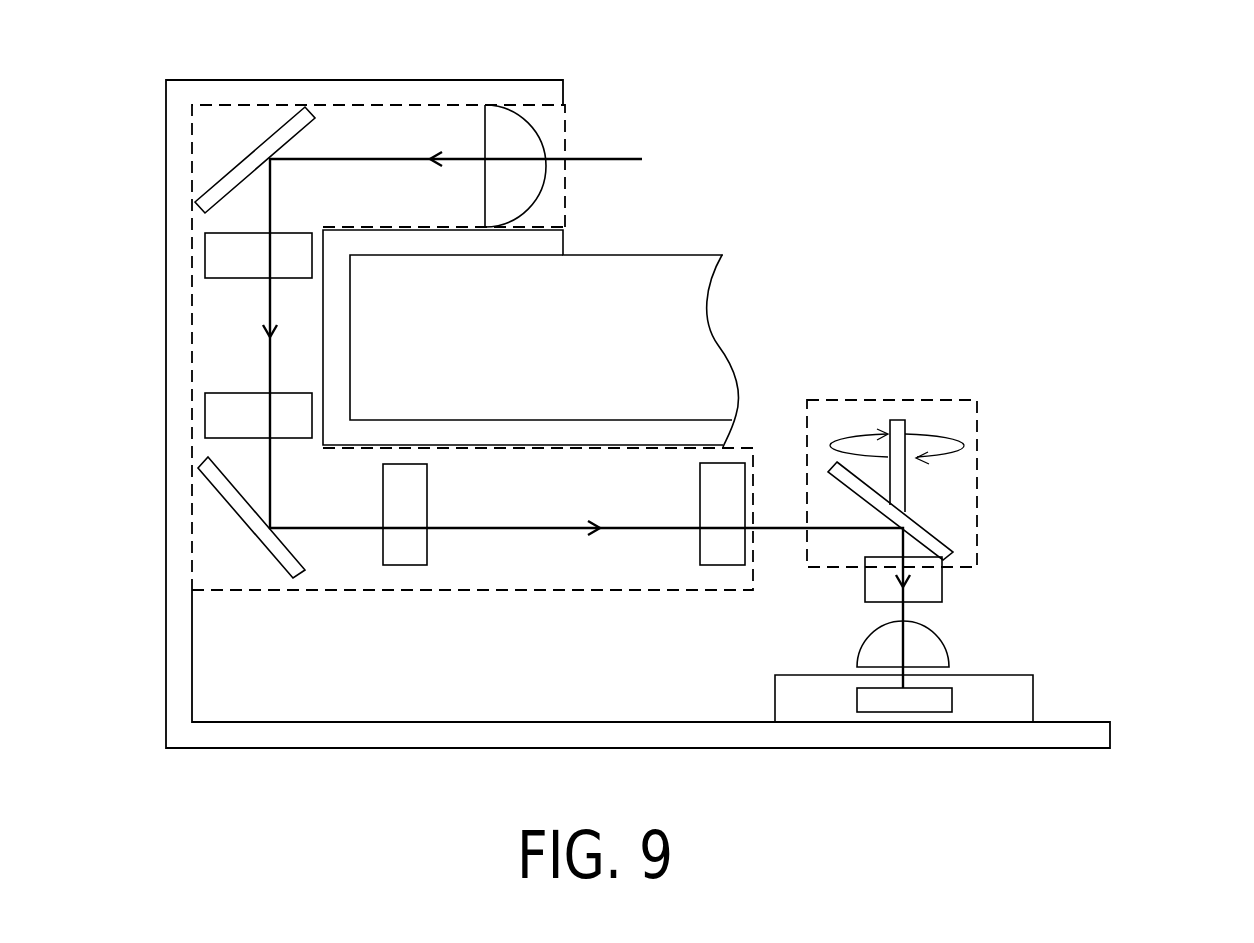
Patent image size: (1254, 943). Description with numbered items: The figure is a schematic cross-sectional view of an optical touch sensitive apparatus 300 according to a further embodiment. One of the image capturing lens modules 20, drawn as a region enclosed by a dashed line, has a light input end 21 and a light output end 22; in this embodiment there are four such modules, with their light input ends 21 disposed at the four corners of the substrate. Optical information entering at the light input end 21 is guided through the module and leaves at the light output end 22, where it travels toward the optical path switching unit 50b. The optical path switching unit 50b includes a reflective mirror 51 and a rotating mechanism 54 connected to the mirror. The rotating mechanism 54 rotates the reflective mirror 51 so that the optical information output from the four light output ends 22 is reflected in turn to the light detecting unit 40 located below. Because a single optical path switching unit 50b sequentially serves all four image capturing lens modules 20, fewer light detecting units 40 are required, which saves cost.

The optical touch sensitive apparatus 300 is at (1238, 791).
The image capturing lens module 20 is at (566, 200).
The light input end 21 is at (582, 133).
The light output end 22 is at (750, 493).
The light detecting unit 40 is at (1033, 690).
The optical path switching unit 50b is at (977, 470).
The reflective mirror 51 is at (956, 546).
The rotating mechanism 54 is at (902, 424).